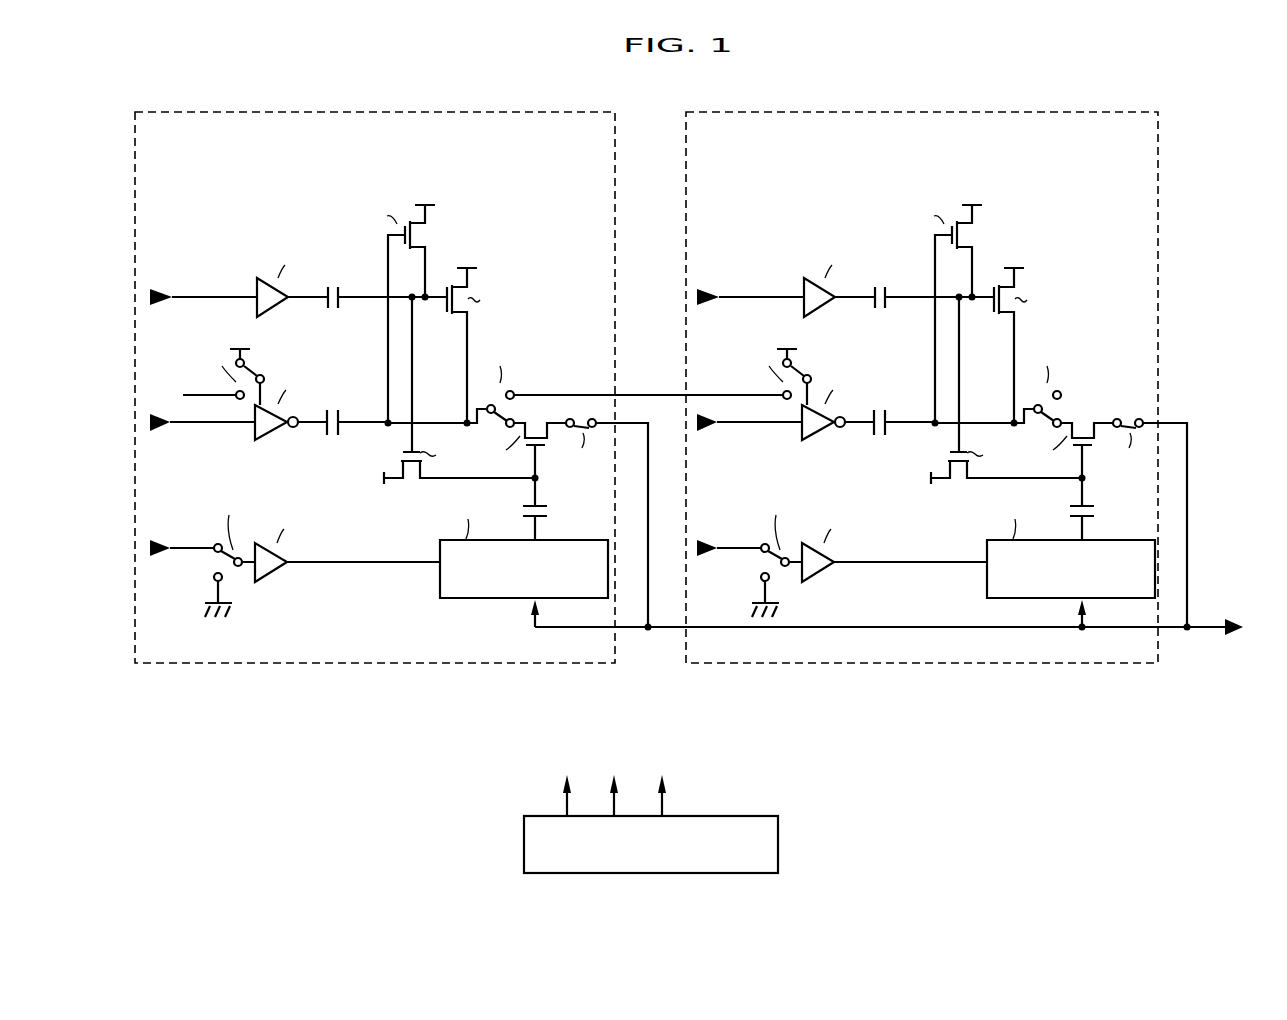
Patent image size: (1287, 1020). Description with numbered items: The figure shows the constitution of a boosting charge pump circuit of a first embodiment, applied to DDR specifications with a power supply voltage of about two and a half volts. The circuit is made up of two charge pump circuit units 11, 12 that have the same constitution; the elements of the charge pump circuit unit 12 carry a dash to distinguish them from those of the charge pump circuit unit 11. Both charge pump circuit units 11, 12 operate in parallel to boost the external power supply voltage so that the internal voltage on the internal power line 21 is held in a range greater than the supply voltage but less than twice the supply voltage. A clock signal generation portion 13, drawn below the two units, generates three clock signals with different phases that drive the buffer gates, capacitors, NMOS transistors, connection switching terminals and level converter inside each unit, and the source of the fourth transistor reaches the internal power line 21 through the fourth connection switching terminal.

The charge pump circuit unit 11 is at (190, 111).
The charge pump circuit unit 12 is at (742, 111).
The clock signal generation portion 13 is at (730, 816).
The internal power line 21 is at (1208, 624).